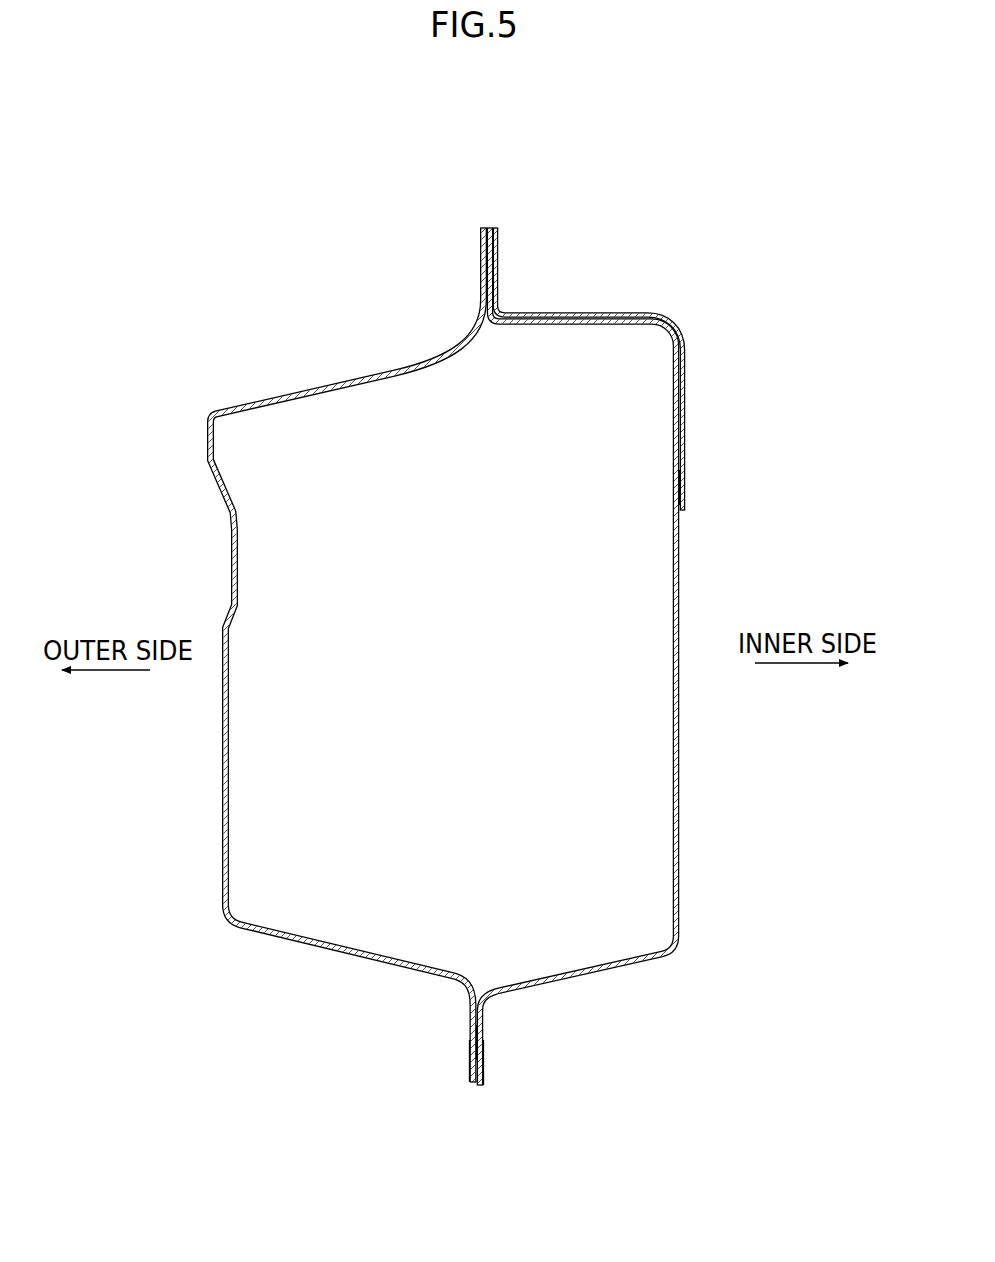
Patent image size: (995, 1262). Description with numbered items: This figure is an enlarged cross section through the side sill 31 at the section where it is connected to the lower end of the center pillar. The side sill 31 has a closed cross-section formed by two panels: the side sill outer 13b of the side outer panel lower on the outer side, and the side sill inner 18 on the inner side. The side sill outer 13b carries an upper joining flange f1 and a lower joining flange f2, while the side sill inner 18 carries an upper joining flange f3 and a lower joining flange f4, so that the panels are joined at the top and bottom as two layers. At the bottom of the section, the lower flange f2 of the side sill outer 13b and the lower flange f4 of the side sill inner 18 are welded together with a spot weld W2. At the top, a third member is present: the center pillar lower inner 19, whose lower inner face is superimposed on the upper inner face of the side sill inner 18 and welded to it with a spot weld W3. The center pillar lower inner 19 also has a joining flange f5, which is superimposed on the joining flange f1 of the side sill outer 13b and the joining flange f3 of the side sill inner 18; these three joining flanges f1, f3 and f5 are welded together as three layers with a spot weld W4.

The side sill 31 is at (247, 334).
The side sill outer 13b is at (223, 760).
The side sill inner 18 is at (678, 737).
The center pillar lower inner 19 is at (685, 388).
The upper joining flange of the side sill outer f1 is at (483, 225).
The lower joining flange of the side sill outer f2 is at (473, 1068).
The upper joining flange of the side sill inner f3 is at (489, 225).
The lower joining flange of the side sill inner f4 is at (483, 1058).
The joining flange of the center pillar lower inner f5 is at (498, 247).
The spot weld W2 is at (470, 1045).
The spot weld W3 is at (683, 488).
The spot weld W4 is at (480, 278).